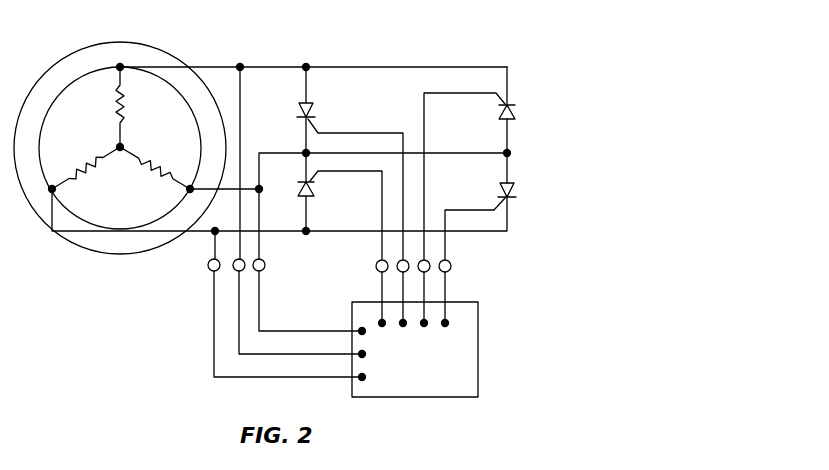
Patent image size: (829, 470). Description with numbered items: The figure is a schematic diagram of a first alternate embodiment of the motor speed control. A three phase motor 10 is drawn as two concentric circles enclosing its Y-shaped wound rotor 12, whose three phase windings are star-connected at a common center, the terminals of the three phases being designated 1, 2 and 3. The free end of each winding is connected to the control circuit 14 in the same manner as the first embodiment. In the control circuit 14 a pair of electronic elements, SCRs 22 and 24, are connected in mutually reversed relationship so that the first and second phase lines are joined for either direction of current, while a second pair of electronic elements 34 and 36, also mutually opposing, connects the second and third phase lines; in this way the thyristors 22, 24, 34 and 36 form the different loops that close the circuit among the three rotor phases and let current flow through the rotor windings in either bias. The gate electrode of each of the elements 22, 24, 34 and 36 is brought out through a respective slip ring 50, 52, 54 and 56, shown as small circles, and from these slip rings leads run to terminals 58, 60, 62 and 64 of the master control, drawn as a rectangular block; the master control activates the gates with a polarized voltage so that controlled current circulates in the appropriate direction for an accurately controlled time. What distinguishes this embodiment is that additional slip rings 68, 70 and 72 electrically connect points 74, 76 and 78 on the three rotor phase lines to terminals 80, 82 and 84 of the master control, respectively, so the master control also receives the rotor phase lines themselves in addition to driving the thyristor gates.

The three phase motor 10 is at (75, 52).
The wound rotor 12 is at (175, 85).
The first phase terminal 1 is at (129, 107).
The second phase terminal 2 is at (155, 171).
The third phase terminal 3 is at (86, 165).
The control circuit 14 is at (420, 67).
The SCR 22 is at (306, 103).
The SCR 24 is at (508, 105).
The electronic element 34 is at (306, 196).
The electronic element 36 is at (508, 183).
The slip ring 50 is at (378, 261).
The slip ring 52 is at (400, 272).
The slip ring 54 is at (428, 272).
The slip ring 56 is at (449, 261).
The master control terminal 58 is at (382, 325).
The master control terminal 60 is at (403, 326).
The master control terminal 62 is at (425, 326).
The master control terminal 64 is at (447, 323).
The additional slip ring 68 is at (233, 269).
The additional slip ring 70 is at (208, 268).
The additional slip ring 72 is at (265, 269).
The phase line point 74 is at (240, 67).
The phase line point 76 is at (259, 189).
The phase line point 78 is at (215, 231).
The master control terminal 80 is at (360, 331).
The master control terminal 82 is at (360, 356).
The master control terminal 84 is at (362, 380).